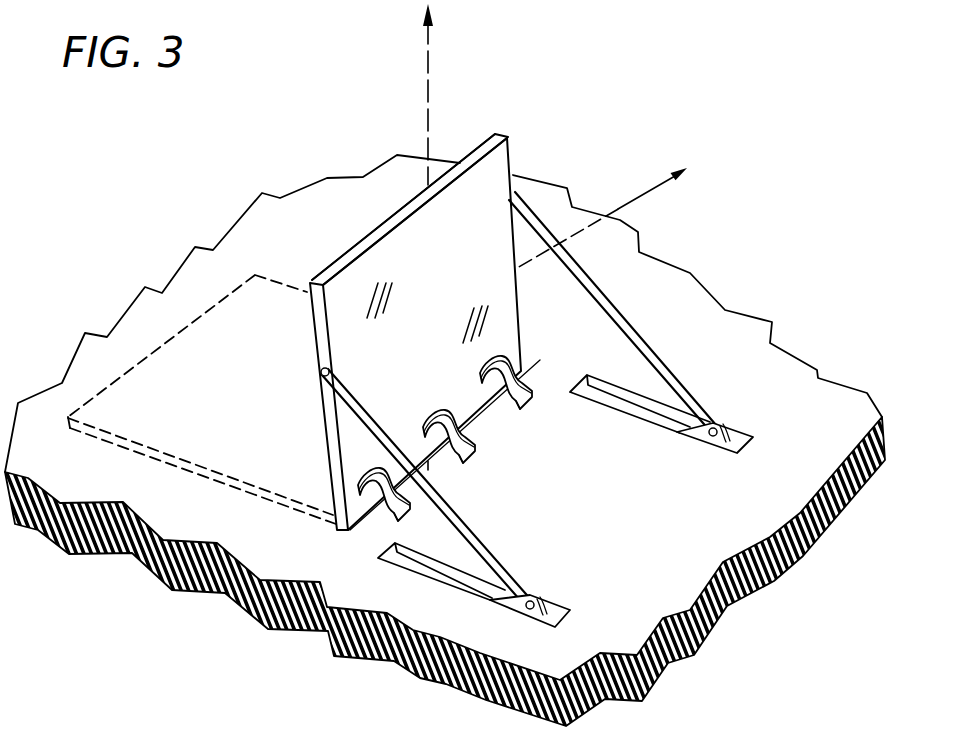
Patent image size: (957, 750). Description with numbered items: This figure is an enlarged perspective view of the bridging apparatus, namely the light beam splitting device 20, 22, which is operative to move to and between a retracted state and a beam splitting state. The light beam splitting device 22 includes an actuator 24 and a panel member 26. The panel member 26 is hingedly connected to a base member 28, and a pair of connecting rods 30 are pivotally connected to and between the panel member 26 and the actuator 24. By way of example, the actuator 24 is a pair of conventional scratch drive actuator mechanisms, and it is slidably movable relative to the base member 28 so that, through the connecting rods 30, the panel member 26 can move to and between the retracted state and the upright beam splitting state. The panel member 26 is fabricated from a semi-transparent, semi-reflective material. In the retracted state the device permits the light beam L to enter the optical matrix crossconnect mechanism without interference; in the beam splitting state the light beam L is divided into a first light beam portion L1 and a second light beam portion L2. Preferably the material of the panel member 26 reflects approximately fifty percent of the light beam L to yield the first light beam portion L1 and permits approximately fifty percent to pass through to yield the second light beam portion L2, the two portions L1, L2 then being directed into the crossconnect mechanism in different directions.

The light beam splitting device 20 is at (203, 190).
The light beam splitting device 22 is at (502, 170).
The actuator 24 is at (742, 432).
The panel member 26 is at (476, 175).
The base member 28 is at (130, 333).
The connecting rods 30 is at (655, 352).
The light beam L is at (427, 373).
The first light beam portion L1 is at (478, 288).
The second light beam portion L2 is at (426, 138).